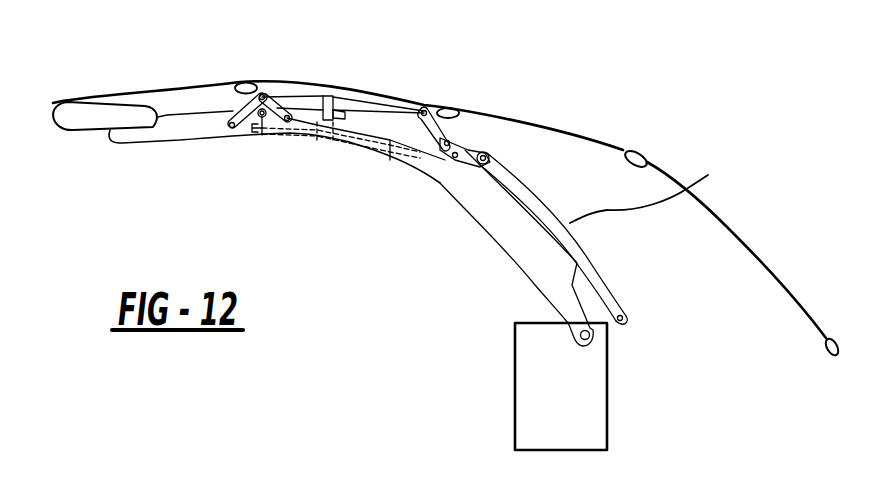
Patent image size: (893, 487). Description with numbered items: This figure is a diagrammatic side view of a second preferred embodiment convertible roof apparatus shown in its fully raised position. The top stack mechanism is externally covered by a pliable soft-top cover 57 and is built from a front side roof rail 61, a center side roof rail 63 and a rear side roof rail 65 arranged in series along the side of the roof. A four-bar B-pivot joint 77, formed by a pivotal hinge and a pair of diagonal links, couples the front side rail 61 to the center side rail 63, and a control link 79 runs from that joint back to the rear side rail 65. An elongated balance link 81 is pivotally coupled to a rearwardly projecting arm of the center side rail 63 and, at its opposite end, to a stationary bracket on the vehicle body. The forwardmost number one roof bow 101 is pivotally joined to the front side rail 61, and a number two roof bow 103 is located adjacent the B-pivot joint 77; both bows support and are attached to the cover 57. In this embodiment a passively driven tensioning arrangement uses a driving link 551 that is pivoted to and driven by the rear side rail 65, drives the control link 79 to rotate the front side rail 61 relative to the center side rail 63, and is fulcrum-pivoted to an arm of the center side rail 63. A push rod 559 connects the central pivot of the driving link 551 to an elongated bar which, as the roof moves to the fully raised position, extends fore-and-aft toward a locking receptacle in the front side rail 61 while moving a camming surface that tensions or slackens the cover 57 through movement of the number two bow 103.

The soft-top cover 57 is at (572, 130).
The balance link 81 is at (649, 187).
The number one roof bow 101 is at (60, 118).
The front side roof rail 61 is at (190, 134).
The control link 79 is at (380, 102).
The number two roof bow 103 is at (247, 82).
The B-pivot joint 77 is at (266, 150).
The push rod 559 is at (432, 146).
The driving link 551 is at (440, 132).
The rear side roof rail 65 is at (527, 238).
The center side roof rail 63 is at (455, 150).